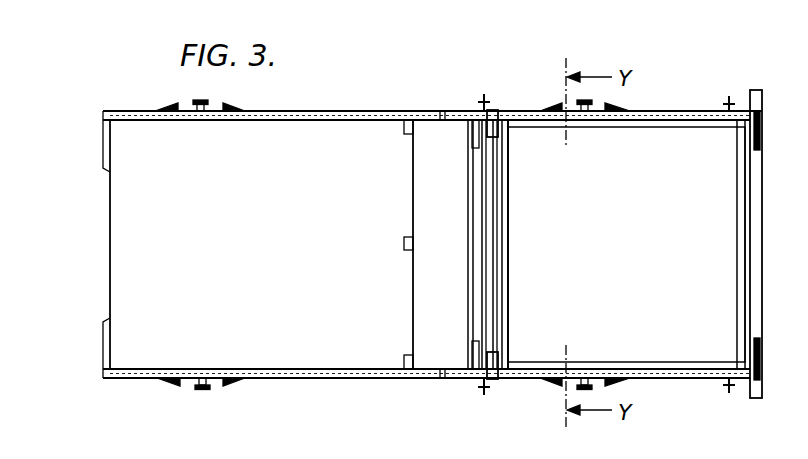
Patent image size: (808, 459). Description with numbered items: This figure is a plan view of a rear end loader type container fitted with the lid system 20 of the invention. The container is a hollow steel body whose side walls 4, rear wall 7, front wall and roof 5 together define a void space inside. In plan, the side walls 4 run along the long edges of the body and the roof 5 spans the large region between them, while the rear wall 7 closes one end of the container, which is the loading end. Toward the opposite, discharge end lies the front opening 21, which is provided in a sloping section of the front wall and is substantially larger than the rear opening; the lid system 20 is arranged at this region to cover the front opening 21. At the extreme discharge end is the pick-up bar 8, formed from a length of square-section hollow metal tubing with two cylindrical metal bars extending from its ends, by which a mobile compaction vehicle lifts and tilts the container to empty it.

The side walls 4 is at (328, 110).
The roof 5 is at (282, 244).
The rear wall 7 is at (102, 247).
The pick-up bar 8 is at (763, 101).
The lid system 20 is at (511, 218).
The front opening 21 is at (668, 335).